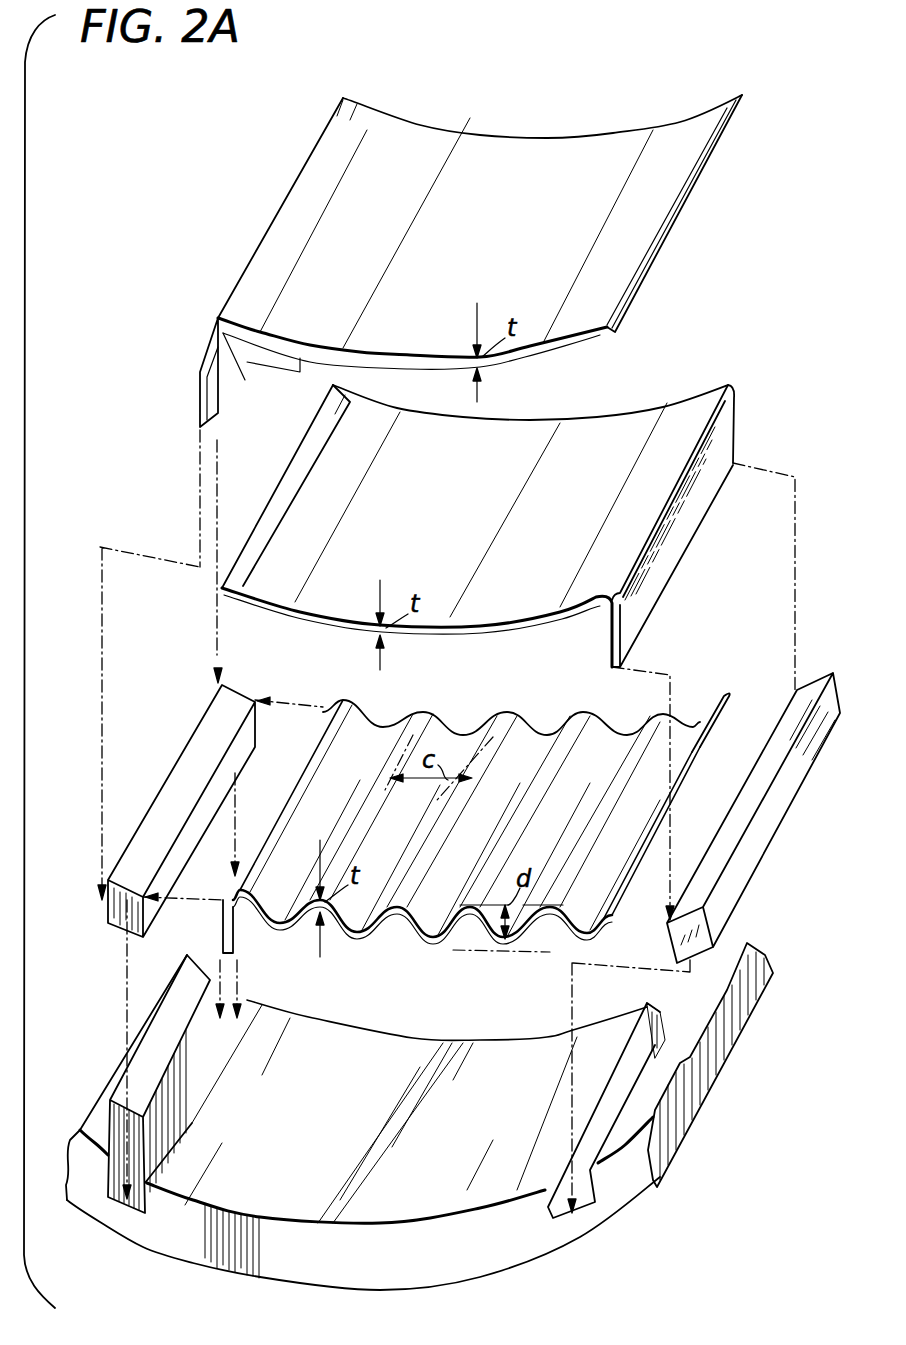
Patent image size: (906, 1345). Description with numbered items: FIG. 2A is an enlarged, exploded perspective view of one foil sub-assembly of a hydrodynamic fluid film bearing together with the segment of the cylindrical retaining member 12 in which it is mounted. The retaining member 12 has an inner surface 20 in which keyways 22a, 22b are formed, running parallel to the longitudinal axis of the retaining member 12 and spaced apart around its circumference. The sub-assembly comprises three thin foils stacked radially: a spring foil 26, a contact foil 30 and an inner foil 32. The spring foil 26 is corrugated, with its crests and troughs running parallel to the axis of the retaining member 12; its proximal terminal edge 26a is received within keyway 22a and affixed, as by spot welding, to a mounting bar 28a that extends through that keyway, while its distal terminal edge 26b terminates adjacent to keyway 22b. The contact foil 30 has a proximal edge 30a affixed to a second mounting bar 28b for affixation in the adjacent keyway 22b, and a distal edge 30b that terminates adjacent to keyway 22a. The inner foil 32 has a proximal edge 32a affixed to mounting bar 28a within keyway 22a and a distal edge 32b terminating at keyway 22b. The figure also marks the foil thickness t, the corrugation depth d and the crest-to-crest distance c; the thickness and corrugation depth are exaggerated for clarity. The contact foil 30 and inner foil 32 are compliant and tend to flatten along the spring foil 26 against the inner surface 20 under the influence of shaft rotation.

The retaining member 12 is at (307, 1237).
The inner surface 20 is at (470, 1083).
The keyway 22a is at (167, 1117).
The keyway 22b is at (612, 1103).
The spring foil 26 is at (418, 938).
The proximal terminal edge 26a is at (236, 928).
The distal terminal edge 26b is at (698, 745).
The mounting bar 28a is at (170, 813).
The mounting bar 28b is at (757, 838).
The contact foil 30 is at (572, 465).
The proximal edge 30a is at (608, 632).
The distal edge 30b is at (260, 517).
The inner foil 32 is at (498, 185).
The proximal edge 32a is at (215, 342).
The distal edge 32b is at (653, 258).